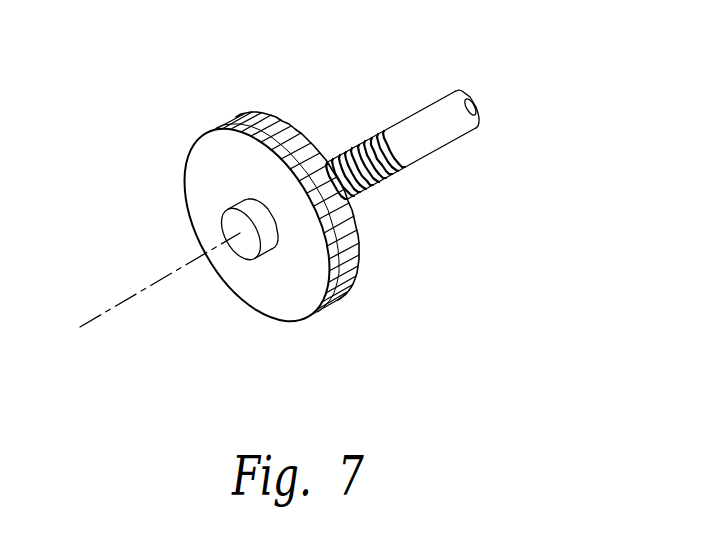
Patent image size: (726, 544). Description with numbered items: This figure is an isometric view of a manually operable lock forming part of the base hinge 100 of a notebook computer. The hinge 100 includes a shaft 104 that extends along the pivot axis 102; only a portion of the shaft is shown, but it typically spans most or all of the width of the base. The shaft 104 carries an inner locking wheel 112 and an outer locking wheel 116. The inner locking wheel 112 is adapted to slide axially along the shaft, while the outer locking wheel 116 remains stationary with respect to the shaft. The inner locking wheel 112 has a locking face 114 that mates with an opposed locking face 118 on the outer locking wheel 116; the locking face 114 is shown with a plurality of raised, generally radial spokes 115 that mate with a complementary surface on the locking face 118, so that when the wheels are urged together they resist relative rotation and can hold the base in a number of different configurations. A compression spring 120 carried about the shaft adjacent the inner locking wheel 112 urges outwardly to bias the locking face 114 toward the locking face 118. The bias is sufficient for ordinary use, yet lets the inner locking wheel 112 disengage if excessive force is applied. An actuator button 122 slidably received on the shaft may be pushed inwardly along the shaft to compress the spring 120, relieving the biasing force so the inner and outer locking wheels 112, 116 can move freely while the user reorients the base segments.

The base hinge 100 is at (146, 240).
The pivot axis 102 is at (120, 303).
The shaft 104 is at (447, 128).
The inner locking wheel 112 is at (362, 237).
The locking face 114 is at (350, 292).
The raised, generally radial spokes 115 is at (318, 140).
The outer locking wheel 116 is at (222, 153).
The locking face 118 is at (259, 116).
The compression spring 120 is at (384, 130).
The actuator button 122 is at (232, 222).